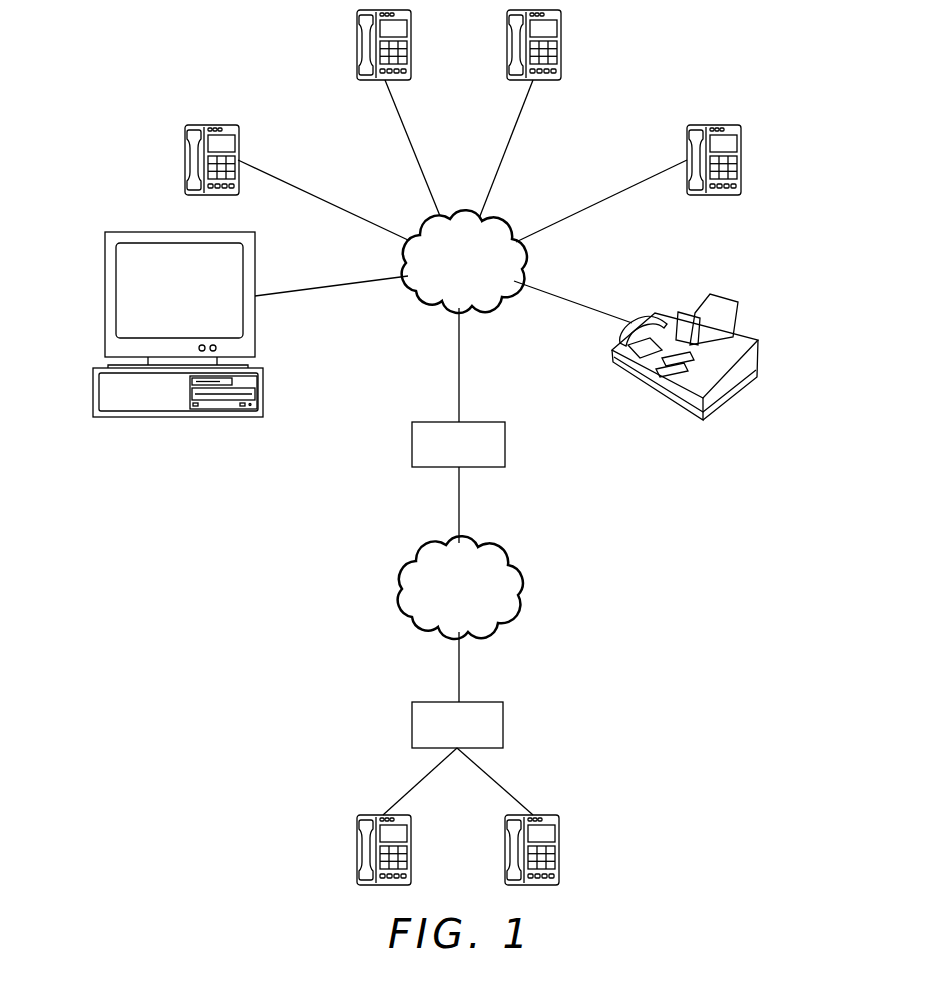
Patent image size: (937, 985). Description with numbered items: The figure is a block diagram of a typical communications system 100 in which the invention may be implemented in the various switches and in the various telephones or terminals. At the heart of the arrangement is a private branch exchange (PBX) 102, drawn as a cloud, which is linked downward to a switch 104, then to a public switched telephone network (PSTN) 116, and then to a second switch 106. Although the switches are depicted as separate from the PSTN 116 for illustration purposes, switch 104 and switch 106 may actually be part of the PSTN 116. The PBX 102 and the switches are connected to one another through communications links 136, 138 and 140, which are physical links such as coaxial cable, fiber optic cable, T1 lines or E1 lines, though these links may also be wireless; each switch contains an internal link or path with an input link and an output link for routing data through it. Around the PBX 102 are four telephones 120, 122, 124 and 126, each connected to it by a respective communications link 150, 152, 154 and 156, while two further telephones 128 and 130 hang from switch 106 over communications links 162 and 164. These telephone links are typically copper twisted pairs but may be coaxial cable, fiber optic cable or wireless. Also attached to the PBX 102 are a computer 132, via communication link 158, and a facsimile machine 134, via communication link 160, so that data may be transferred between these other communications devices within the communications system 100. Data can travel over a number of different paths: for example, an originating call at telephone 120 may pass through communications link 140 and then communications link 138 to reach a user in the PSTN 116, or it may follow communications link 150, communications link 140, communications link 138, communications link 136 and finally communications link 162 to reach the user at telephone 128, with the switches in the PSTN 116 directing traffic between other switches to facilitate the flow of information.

The communications system 100 is at (734, 649).
The private branch exchange (PBX) 102 is at (418, 300).
The switch 104 is at (412, 445).
The switch 106 is at (503, 728).
The public switched telephone network (PSTN) 116 is at (518, 588).
The telephone 120 is at (357, 43).
The telephone 122 is at (561, 46).
The telephone 124 is at (185, 160).
The telephone 126 is at (742, 163).
The telephone 128 is at (357, 850).
The telephone 130 is at (558, 850).
The computer 132 is at (105, 297).
The facsimile machine 134 is at (765, 350).
The communications link 136 is at (459, 657).
The communications link 138 is at (459, 510).
The communications link 140 is at (459, 371).
The communications link 150 is at (413, 150).
The communications link 152 is at (508, 150).
The communications link 154 is at (323, 200).
The communications link 156 is at (602, 202).
The communication link 158 is at (333, 287).
The communication link 160 is at (573, 302).
The communications link 162 is at (416, 786).
The communications link 164 is at (498, 786).